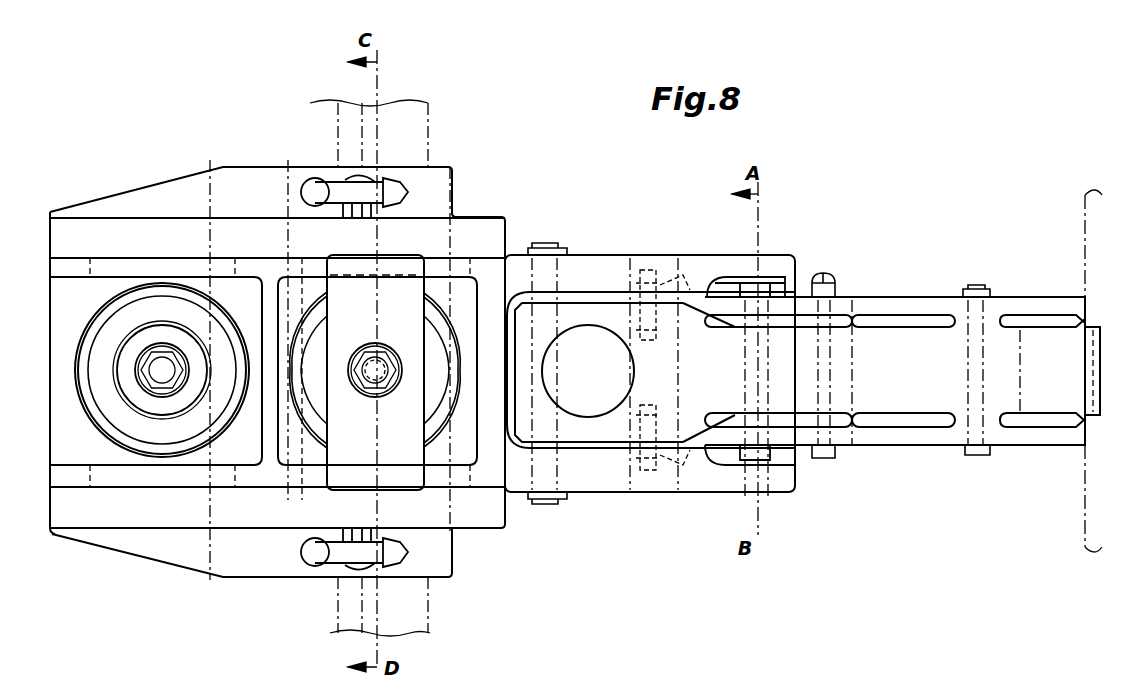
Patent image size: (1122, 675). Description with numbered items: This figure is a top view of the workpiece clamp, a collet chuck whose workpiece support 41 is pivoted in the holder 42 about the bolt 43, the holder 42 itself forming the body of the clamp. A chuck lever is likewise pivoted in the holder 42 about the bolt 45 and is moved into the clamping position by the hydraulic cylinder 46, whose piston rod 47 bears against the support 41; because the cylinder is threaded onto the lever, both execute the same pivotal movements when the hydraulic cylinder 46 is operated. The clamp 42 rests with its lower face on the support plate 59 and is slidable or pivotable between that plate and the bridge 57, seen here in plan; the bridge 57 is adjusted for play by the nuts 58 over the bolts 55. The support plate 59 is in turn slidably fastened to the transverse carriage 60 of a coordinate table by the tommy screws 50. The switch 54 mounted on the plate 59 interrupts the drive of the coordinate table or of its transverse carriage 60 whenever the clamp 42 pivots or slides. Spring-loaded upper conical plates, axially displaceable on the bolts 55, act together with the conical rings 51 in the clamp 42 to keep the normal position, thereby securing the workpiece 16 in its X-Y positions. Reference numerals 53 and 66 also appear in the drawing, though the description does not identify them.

The workpiece 16 is at (1093, 515).
The workpiece support 41 is at (931, 303).
The holder 42 is at (602, 265).
The bolt 43 is at (558, 240).
The bolt 45 is at (978, 285).
The hydraulic cylinder 46 is at (651, 415).
The piston rod 47 is at (600, 407).
The tommy screws 50 is at (395, 555).
The conical rings 51 is at (97, 332).
The nut 53 is at (760, 303).
The switch 54 is at (782, 293).
The bolts 55 is at (138, 378).
The bridge 57 is at (342, 472).
The nuts 58 is at (381, 397).
The support plate 59 is at (442, 557).
The transverse carriage 60 is at (418, 620).
The bearing ring 66 is at (107, 367).